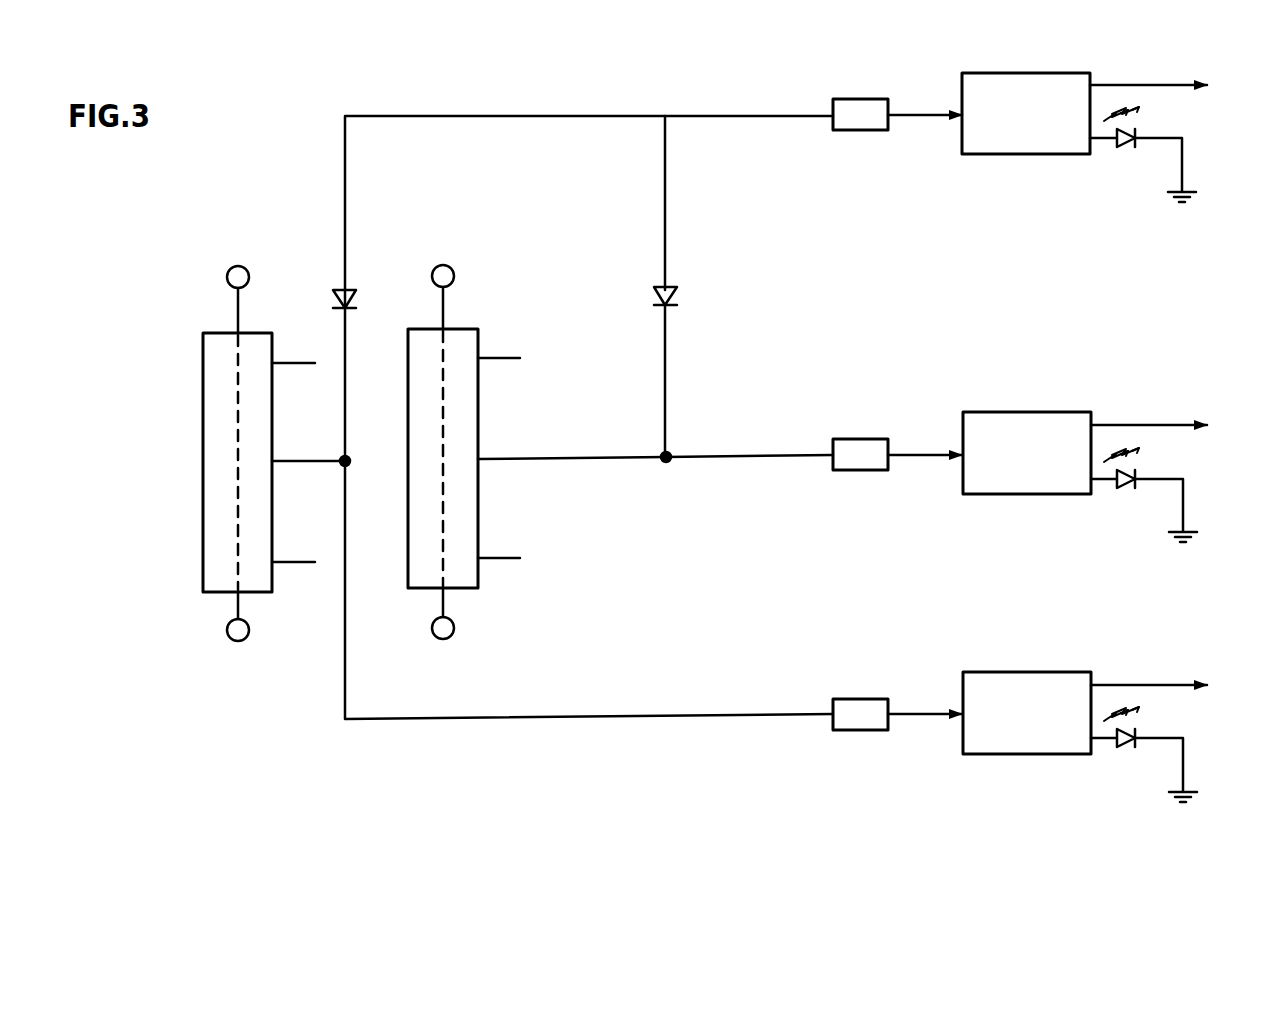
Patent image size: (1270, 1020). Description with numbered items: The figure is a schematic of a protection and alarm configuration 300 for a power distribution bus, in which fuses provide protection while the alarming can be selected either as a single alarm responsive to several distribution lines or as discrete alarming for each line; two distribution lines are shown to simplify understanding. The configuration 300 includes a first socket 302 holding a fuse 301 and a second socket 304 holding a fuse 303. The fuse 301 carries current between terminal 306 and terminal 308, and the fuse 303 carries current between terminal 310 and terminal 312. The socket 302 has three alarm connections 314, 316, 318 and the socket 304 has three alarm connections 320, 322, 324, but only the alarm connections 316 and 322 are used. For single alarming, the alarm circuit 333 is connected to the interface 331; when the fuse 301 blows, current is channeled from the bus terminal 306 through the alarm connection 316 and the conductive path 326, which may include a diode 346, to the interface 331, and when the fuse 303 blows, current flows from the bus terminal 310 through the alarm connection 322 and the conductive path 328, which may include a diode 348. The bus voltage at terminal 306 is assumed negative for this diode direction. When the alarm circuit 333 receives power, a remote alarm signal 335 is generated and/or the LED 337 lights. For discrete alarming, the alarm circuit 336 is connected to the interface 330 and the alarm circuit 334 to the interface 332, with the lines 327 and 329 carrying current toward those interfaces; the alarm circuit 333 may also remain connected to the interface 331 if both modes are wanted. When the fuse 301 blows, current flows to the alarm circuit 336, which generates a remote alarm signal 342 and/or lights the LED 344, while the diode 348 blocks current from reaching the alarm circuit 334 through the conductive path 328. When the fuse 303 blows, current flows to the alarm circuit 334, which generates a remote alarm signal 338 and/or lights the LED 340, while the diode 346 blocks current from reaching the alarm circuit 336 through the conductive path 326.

The protection and alarm configuration 300 is at (741, 748).
The fuse 301 is at (235, 390).
The first socket 302 is at (203, 523).
The fuse 303 is at (442, 367).
The second socket 304 is at (408, 518).
The terminal 306 is at (241, 266).
The terminal 308 is at (247, 636).
The terminal 310 is at (452, 270).
The terminal 312 is at (452, 634).
The alarm connection 314 is at (287, 362).
The alarm connection 316 is at (295, 459).
The alarm connection 318 is at (293, 561).
The alarm connection 320 is at (492, 352).
The alarm connection 322 is at (500, 456).
The alarm connection 324 is at (498, 557).
The conductive path 326 is at (613, 116).
The third line 327 is at (615, 716).
The conductive path 328 is at (667, 217).
The second line 329 is at (728, 454).
The interface 330 is at (860, 699).
The interface 331 is at (860, 99).
The interface 332 is at (860, 439).
The alarm circuit 333 is at (1042, 73).
The alarm circuit 334 is at (1043, 412).
The remote alarm signal 335 is at (1133, 85).
The alarm circuit 336 is at (1043, 672).
The LED 337 is at (1128, 155).
The remote alarm signal 338 is at (1133, 425).
The LED 340 is at (1128, 494).
The remote alarm signal 342 is at (1133, 685).
The LED 344 is at (1128, 754).
The diode 346 is at (365, 282).
The diode 348 is at (685, 277).